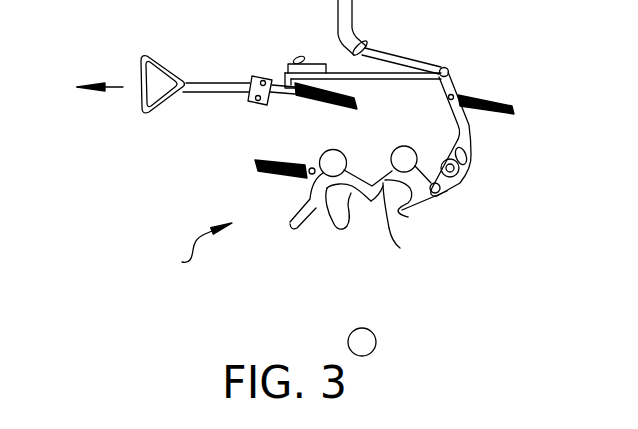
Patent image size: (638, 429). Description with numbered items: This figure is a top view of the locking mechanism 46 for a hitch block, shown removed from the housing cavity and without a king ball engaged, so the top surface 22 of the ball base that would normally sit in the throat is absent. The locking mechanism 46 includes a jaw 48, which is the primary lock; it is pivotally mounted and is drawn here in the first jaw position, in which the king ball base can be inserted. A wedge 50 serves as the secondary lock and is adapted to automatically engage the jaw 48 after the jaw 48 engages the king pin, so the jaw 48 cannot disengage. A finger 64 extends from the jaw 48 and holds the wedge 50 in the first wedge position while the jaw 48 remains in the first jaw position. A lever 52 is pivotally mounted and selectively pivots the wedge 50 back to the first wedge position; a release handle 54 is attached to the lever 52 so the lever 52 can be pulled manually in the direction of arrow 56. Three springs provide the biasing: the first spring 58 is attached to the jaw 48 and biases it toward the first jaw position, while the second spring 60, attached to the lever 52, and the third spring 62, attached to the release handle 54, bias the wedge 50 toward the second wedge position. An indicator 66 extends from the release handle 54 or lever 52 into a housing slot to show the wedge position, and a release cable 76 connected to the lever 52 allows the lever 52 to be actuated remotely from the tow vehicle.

The top surface 22 is at (370, 330).
The locking mechanism 46 is at (195, 250).
The jaw 48 is at (290, 224).
The wedge 50 is at (408, 217).
The lever 52 is at (472, 134).
The release handle 54 is at (176, 74).
The arrow 56 is at (113, 86).
The first spring 58 is at (279, 174).
The second spring 60 is at (478, 93).
The third spring 62 is at (320, 107).
The finger 64 is at (400, 248).
The indicator 66 is at (294, 58).
The release cable 76 is at (395, 60).